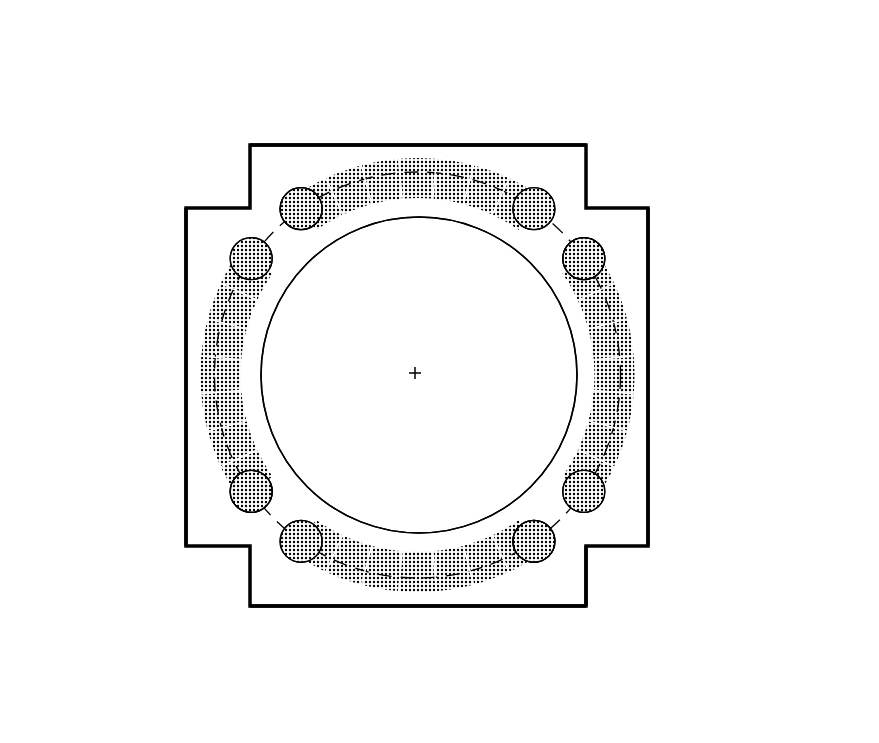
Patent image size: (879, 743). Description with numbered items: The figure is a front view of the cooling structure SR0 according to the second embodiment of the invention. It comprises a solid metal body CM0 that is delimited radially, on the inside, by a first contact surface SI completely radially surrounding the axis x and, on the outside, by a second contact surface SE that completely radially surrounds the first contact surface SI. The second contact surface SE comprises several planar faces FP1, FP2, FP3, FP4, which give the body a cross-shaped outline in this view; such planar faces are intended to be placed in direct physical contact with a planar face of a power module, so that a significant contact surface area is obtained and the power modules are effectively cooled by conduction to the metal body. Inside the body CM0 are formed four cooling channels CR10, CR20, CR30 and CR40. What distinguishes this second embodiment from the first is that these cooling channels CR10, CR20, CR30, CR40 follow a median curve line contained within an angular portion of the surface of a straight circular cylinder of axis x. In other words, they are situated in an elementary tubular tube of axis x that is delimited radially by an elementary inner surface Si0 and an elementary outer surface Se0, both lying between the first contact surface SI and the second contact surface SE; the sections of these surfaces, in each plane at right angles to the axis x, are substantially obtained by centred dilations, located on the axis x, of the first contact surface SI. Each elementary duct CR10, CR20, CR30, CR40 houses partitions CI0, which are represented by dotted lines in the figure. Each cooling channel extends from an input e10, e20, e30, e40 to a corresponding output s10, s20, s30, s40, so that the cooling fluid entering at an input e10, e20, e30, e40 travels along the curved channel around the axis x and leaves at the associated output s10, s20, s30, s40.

The cooling structure SR0 is at (134, 133).
The solid body CM0 is at (186, 207).
The planar face FP1 is at (178, 410).
The planar face FP2 is at (520, 138).
The planar face FP3 is at (656, 441).
The planar face FP4 is at (366, 612).
The second contact surface SE is at (594, 606).
The elementary outer surface Se0 is at (570, 214).
The partitions CI0 is at (415, 162).
The elementary inner surface Si0 is at (537, 247).
The first contact surface SI is at (300, 468).
The output s10 is at (232, 245).
The output s20 is at (540, 190).
The output s30 is at (602, 497).
The output s40 is at (303, 566).
The cooling channel CR10 is at (222, 483).
The cooling channel CR20 is at (302, 184).
The cooling channel CR30 is at (608, 243).
The cooling channel CR40 is at (527, 570).
The input e10 is at (240, 504).
The input e20 is at (283, 196).
The input e30 is at (605, 264).
The input e40 is at (550, 556).
The axis x is at (419, 372).